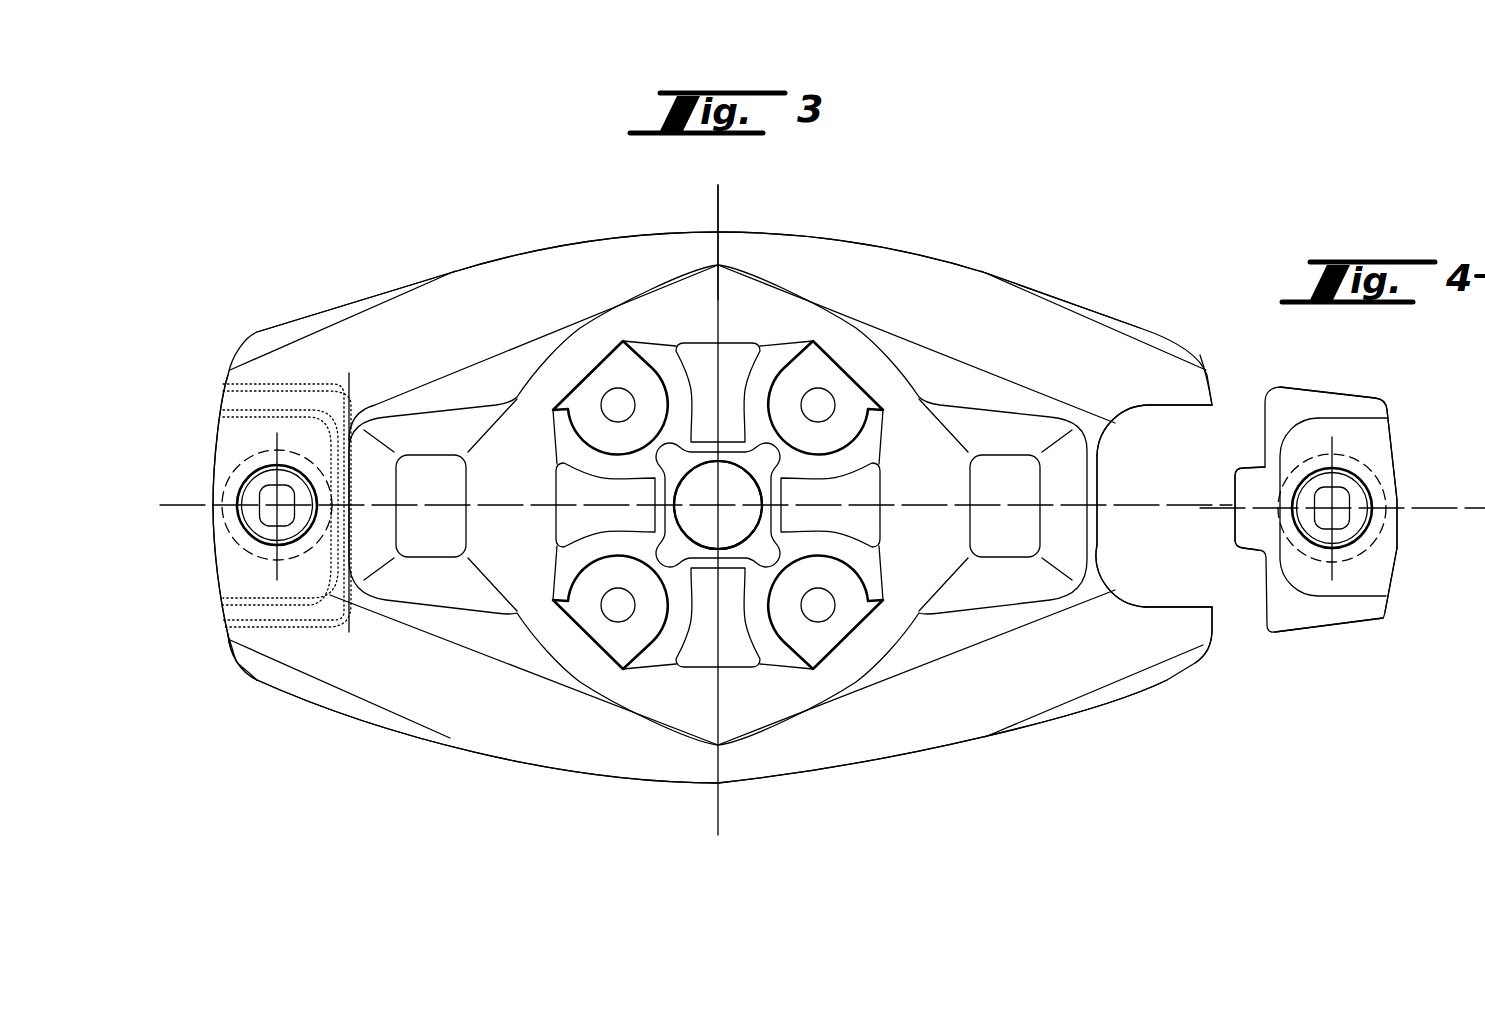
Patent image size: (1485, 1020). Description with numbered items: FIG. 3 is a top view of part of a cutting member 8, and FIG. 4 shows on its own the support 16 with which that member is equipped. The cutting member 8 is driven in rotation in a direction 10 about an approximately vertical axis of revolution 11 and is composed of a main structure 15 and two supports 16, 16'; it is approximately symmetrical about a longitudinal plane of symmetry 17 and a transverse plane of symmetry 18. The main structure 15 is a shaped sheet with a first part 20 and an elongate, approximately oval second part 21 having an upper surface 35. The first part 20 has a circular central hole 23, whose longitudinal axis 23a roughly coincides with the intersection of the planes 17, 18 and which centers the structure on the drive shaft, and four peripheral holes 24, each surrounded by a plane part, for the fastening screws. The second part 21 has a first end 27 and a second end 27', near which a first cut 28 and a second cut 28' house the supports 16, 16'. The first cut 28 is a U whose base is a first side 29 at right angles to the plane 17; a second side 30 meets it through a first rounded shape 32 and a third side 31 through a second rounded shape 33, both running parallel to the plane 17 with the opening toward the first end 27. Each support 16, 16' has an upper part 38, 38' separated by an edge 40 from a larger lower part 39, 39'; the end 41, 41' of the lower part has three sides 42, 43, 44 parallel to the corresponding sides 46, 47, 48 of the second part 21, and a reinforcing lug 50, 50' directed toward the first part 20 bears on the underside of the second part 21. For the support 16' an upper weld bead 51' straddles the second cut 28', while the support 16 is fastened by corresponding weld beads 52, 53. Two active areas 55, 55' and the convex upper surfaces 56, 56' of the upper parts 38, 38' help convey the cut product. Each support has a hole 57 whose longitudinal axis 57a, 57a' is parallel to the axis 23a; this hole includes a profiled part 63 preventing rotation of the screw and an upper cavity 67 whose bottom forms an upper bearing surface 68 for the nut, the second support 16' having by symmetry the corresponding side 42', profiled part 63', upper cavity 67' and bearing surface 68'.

In FIG. 3, the cutting member 8 is at (838, 229).
In FIG. 3, the direction of rotation 10 is at (1127, 713).
In FIG. 3, the main structure 15 is at (517, 250).
In FIG. 4, the first support 16 is at (1360, 504).
In FIG. 3, the second support 16' is at (254, 502).
In FIG. 3, the longitudinal plane of symmetry 17 is at (193, 503).
In FIG. 3, the transverse plane of symmetry 18 is at (721, 222).
In FIG. 3, the first part 20 is at (903, 367).
In FIG. 3, the second part 21 is at (650, 783).
In FIG. 3, the central hole 23 is at (680, 537).
In FIG. 3, the longitudinal axis of the central hole 23a is at (718, 505).
In FIG. 3, the axis of revolution 11 is at (719, 505).
In FIG. 3, the peripheral holes 24 is at (613, 412).
In FIG. 3, the first end 27 is at (1233, 670).
In FIG. 3, the second end 27' is at (236, 689).
In FIG. 3, the first cut 28 is at (1178, 569).
In FIG. 3, the second cut 28' is at (329, 305).
In FIG. 3, the first side 29 is at (1097, 497).
In FIG. 3, the second side 30 is at (1190, 410).
In FIG. 3, the third side 31 is at (1193, 607).
In FIG. 3, the first rounded shape 32 is at (1113, 430).
In FIG. 3, the second rounded shape 33 is at (1110, 581).
In FIG. 3, the upper surface 35 is at (1010, 704).
In FIG. 4, the upper part 38 is at (1416, 435).
In FIG. 3, the upper part 38' is at (197, 405).
In FIG. 4, the lower part 39 is at (1327, 374).
In FIG. 3, the lower part 39' is at (347, 370).
In FIG. 4, the edge 40 is at (1305, 418).
In FIG. 4, the end 41 is at (1400, 383).
In FIG. 3, the end 41' is at (265, 320).
In FIG. 4, the side 42 is at (1406, 495).
In FIG. 3, the outer wall (variant) 42' is at (194, 570).
In FIG. 4, the side 43 is at (1353, 393).
In FIG. 4, the side 44 is at (1363, 617).
In FIG. 3, the side 46 is at (1217, 374).
In FIG. 3, the side 47 is at (917, 250).
In FIG. 3, the side 48 is at (933, 757).
In FIG. 4, the reinforcing lug 50 is at (1250, 531).
In FIG. 3, the reinforcing lug 50' is at (409, 439).
In FIG. 3, the upper weld bead 51' is at (721, 667).
In FIG. 3, the lower weld bead 52 is at (410, 397).
In FIG. 3, the weld bead 53 is at (397, 540).
In FIG. 4, the active area 55 is at (1412, 584).
In FIG. 3, the active area 55' is at (211, 407).
In FIG. 4, the convex upper surface 56 is at (1332, 513).
In FIG. 3, the convex upper surface 56' is at (273, 511).
In FIG. 3, the hole 57 is at (247, 525).
In FIG. 4, the hole 57 is at (1373, 512).
In FIG. 4, the longitudinal axis of the hole 57a is at (1281, 592).
In FIG. 3, the longitudinal axis of the hole 57a' is at (373, 415).
In FIG. 4, the profiled part 63 is at (1379, 500).
In FIG. 3, the bore (variant) 63' is at (232, 476).
In FIG. 4, the upper cavity 67 is at (1419, 469).
In FIG. 3, the bushing edge (variant) 67' is at (326, 654).
In FIG. 4, the upper bearing surface 68 is at (1324, 614).
In FIG. 3, the bushing line (variant) 68' is at (295, 638).